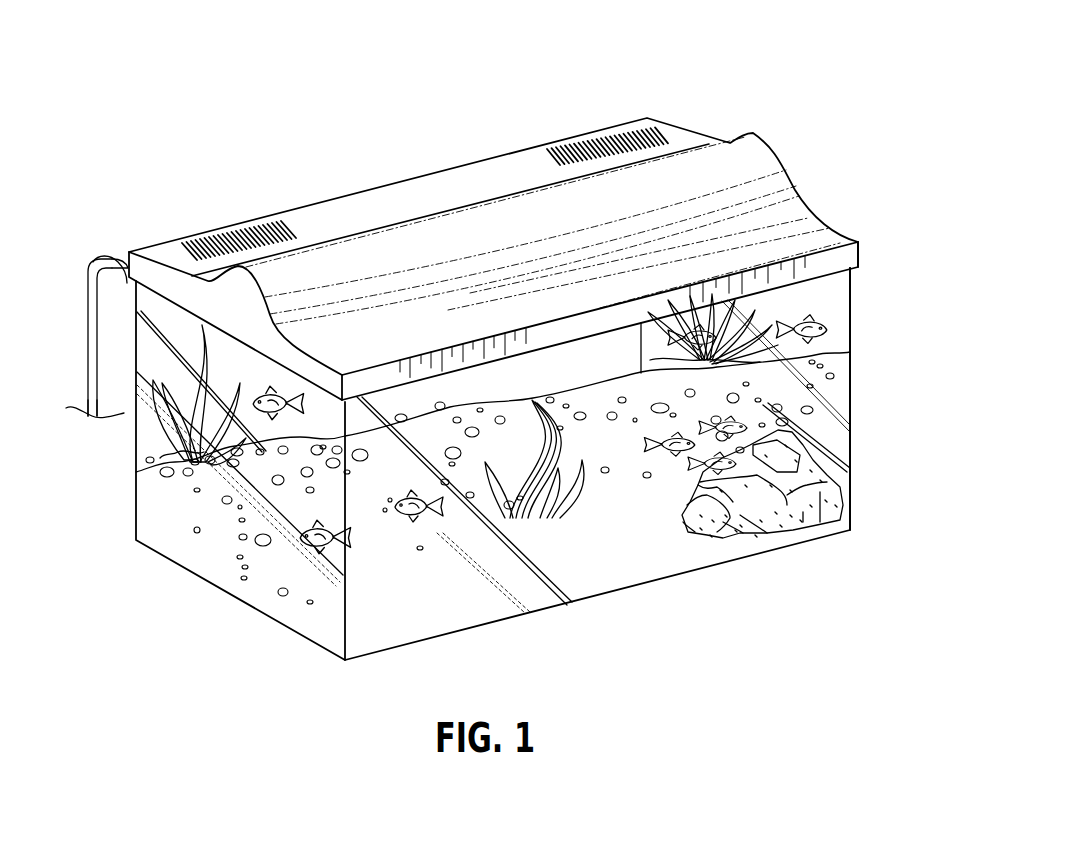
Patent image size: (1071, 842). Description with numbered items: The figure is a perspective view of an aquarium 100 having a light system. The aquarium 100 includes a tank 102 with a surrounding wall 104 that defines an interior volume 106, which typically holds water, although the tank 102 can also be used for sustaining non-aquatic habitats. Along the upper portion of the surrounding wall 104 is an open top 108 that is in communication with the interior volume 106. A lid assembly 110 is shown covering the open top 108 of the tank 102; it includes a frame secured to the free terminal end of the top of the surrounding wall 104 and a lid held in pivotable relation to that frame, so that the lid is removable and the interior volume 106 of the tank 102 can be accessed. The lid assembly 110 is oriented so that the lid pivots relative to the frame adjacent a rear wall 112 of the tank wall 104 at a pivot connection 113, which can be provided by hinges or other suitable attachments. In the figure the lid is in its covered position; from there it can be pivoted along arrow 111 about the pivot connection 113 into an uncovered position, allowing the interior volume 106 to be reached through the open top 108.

The aquarium 100 is at (718, 79).
The tank 102 is at (852, 318).
The surrounding wall 104 is at (852, 376).
The interior volume 106 is at (163, 447).
The open top 108 is at (177, 310).
The lid assembly 110 is at (370, 200).
The arrow 111 is at (845, 163).
The rear wall 112 is at (137, 348).
The pivot connection 113 is at (92, 260).